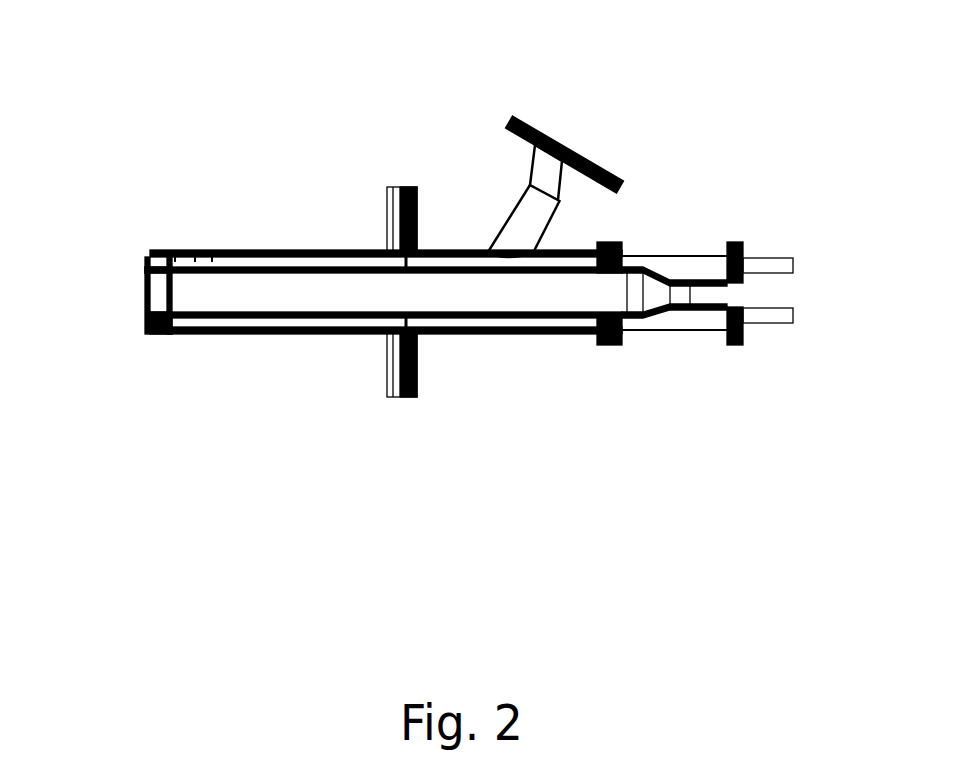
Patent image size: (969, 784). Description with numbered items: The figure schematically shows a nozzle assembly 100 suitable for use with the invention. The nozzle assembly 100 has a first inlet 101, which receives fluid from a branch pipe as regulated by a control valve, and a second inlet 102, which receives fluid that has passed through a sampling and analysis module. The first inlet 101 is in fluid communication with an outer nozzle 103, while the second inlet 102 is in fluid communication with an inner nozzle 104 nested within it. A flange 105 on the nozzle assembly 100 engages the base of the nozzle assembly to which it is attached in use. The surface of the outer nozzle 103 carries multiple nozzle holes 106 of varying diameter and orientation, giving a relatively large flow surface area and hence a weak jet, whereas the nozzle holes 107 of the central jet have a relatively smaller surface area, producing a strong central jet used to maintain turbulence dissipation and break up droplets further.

The nozzle assembly 100 is at (695, 112).
The first inlet 101 is at (563, 148).
The second inlet 102 is at (725, 292).
The outer nozzle 103 is at (325, 265).
The inner nozzle 104 is at (325, 292).
The flange 105 is at (402, 188).
The nozzle holes 106 is at (213, 258).
The nozzle holes 107 is at (147, 293).